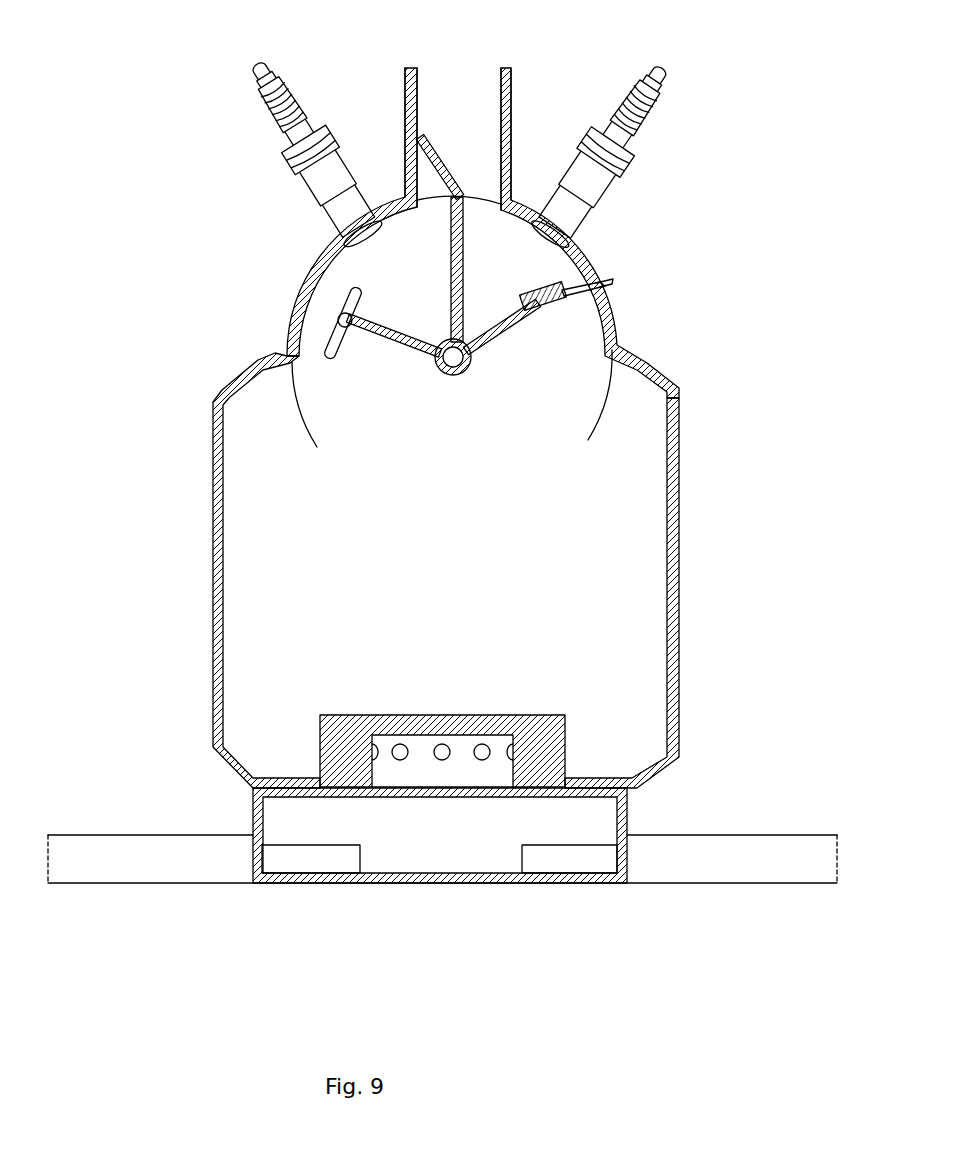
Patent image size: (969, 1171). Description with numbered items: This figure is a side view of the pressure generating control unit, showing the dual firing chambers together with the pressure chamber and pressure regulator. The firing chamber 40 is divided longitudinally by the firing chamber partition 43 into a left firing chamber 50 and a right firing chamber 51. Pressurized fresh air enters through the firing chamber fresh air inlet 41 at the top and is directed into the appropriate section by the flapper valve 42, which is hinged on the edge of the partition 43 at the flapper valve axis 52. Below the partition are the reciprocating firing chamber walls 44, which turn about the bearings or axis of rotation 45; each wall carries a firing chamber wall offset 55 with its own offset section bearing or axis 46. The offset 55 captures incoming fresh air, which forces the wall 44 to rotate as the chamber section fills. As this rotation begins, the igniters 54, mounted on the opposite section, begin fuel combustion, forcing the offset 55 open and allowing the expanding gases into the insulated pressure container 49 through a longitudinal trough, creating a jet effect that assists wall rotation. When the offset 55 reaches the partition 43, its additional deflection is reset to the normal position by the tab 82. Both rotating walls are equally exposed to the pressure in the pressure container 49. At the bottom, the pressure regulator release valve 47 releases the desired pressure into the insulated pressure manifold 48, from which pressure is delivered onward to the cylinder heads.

The firing chamber 40 is at (610, 400).
The firing chamber fresh air inlet 41 is at (462, 95).
The flapper valve 42 is at (440, 163).
The firing chamber partition 43 is at (463, 273).
The reciprocating firing chamber walls 44 is at (498, 330).
The reciprocating firing chamber walls bearings/axis of rotation 45 is at (447, 337).
The reciprocating firing chamber wall offset section bearing/axis 46 is at (557, 305).
The pressure regulator release valve 47 is at (445, 793).
The insulated pressure manifold 48 is at (767, 835).
The insulated pressure container 49 is at (217, 668).
The left firing chamber 50 is at (367, 268).
The right firing chamber 51 is at (575, 275).
The firing chamber fresh air inlet flapper valve axis 52 is at (466, 176).
The igniters 54 is at (270, 129).
The firing chamber wall offset 55 is at (583, 298).
The tab to reset firing chamber wall offset to normal position 82 is at (353, 290).